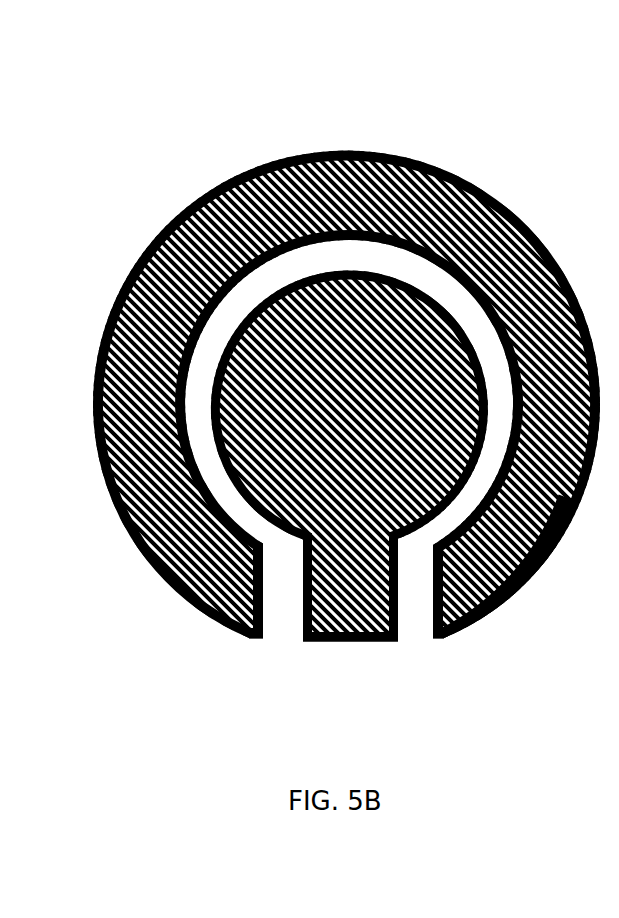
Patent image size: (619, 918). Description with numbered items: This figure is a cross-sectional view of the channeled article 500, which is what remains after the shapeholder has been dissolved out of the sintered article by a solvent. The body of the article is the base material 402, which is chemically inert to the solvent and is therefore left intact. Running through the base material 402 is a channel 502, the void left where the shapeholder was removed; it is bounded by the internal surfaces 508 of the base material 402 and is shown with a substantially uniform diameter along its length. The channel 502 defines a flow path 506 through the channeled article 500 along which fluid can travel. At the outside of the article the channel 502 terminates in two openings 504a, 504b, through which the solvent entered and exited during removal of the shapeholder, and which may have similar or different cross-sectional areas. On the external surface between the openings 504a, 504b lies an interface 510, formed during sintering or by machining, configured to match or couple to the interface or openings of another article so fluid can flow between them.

The channeled article 500 is at (309, 418).
The base material 402 is at (309, 426).
The channel 502 is at (178, 468).
The opening 504a is at (258, 632).
The opening 504b is at (422, 627).
The flow path 506 is at (309, 501).
The internal surfaces 508 is at (478, 527).
The interface 510 is at (340, 636).